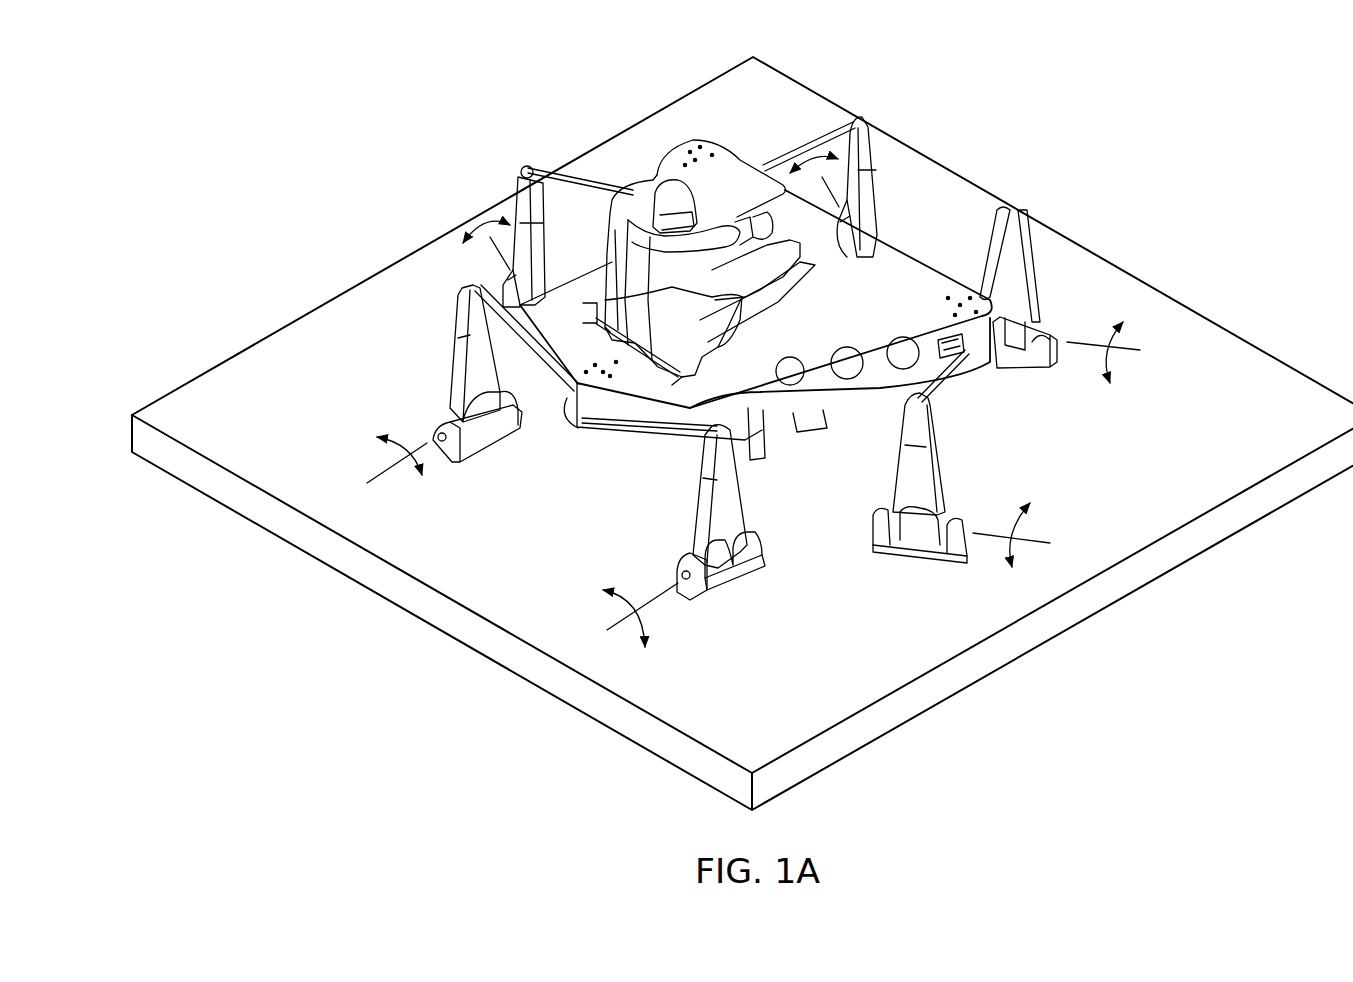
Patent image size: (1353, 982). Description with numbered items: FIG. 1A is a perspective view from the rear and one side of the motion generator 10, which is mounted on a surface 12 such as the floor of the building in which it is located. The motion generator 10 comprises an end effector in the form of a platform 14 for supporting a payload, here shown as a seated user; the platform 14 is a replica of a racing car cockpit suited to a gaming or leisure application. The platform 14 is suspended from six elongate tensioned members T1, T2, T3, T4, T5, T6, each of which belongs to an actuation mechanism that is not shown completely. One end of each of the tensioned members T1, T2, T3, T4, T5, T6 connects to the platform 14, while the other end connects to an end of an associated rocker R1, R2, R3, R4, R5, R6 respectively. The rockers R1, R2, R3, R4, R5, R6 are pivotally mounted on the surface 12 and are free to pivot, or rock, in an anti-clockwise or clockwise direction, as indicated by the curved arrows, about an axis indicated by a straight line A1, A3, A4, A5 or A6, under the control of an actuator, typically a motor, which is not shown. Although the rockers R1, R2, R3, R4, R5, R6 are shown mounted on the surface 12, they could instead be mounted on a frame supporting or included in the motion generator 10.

The motion generator 10 is at (1118, 148).
The surface 12 is at (1266, 420).
The platform 14 is at (918, 318).
The elongate tensioned member T1 is at (788, 148).
The elongate tensioned member T2 is at (597, 172).
The elongate tensioned member T3 is at (554, 385).
The elongate tensioned member T4 is at (626, 419).
The elongate tensioned member T5 is at (940, 390).
The elongate tensioned member T6 is at (1003, 260).
The rocker R1 is at (877, 147).
The rocker R2 is at (515, 175).
The rocker R3 is at (446, 357).
The rocker R4 is at (749, 507).
The rocker R5 is at (950, 478).
The rocker R6 is at (1017, 295).
The axis A1 is at (1122, 352).
The axis A3 is at (478, 228).
The axis A4 is at (380, 477).
The axis A5 is at (625, 623).
The axis A6 is at (1028, 535).